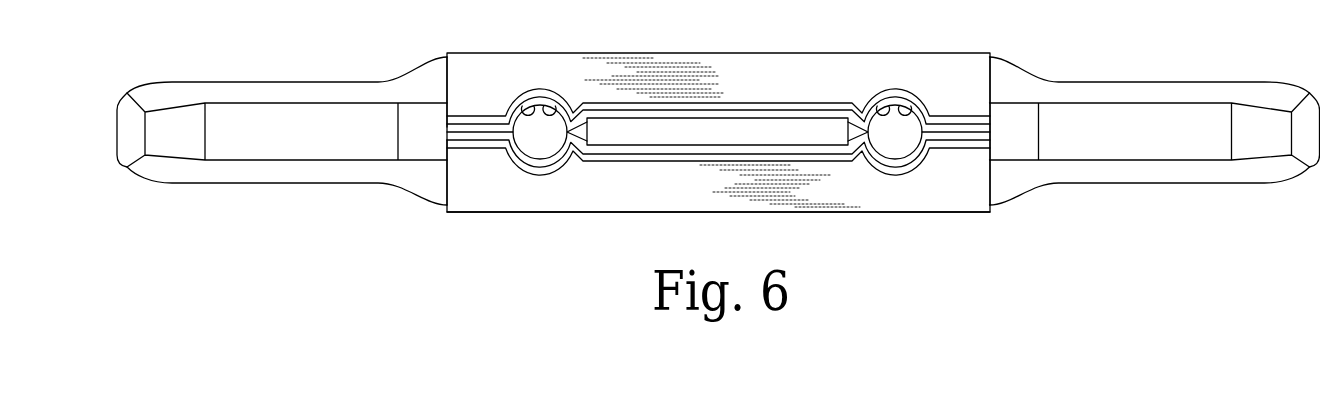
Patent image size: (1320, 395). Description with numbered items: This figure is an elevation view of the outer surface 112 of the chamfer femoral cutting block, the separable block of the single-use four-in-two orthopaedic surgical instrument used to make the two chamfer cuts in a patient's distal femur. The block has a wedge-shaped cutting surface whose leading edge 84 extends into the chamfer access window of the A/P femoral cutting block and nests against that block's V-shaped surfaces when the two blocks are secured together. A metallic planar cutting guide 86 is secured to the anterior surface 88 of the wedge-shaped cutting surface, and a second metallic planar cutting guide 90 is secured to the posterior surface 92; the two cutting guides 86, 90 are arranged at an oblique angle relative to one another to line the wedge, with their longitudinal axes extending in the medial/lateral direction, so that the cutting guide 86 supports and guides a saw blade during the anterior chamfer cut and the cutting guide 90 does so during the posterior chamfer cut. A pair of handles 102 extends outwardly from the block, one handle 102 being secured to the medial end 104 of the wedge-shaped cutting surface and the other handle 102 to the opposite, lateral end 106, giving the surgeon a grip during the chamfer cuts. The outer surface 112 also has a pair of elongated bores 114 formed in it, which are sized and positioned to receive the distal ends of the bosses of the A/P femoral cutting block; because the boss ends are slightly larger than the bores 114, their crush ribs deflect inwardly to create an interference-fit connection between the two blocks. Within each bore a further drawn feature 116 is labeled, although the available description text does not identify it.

The leading edge 84 is at (802, 116).
The planar cutting guide 86 is at (740, 67).
The anterior surface 88 is at (645, 117).
The planar cutting guide 90 is at (542, 200).
The posterior surface 92 is at (652, 148).
The handle 102 is at (238, 85).
The medial end 104 is at (447, 127).
The lateral end 106 is at (992, 118).
The outer surface 112 is at (447, 173).
The elongated bore 114 is at (557, 107).
The rotor vane 116 is at (528, 105).